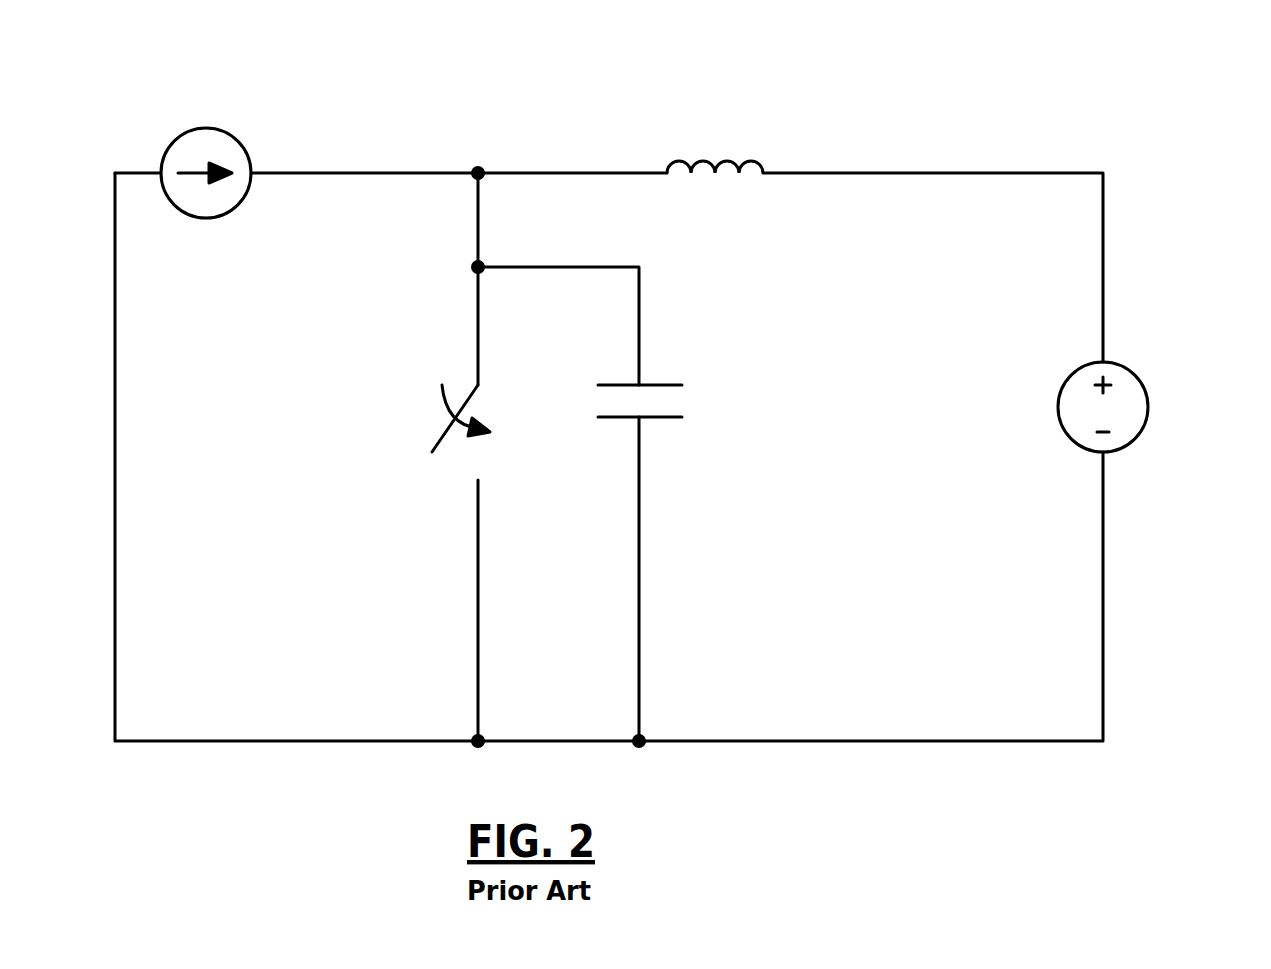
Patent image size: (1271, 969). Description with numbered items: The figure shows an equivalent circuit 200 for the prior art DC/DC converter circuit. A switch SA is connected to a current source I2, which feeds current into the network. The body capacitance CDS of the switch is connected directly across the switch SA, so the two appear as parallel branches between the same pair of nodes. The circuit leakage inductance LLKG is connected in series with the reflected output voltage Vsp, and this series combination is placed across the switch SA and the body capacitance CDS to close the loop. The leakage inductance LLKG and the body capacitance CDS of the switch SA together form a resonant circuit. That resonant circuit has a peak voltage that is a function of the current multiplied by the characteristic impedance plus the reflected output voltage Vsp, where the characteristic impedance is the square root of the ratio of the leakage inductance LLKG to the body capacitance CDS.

The equivalent circuit 200 is at (660, 395).
The current source I2 is at (206, 145).
The leakage inductance LLKG is at (715, 141).
The switch SA is at (444, 418).
The body capacitance CDS is at (670, 410).
The reflected output voltage Vsp is at (1132, 407).